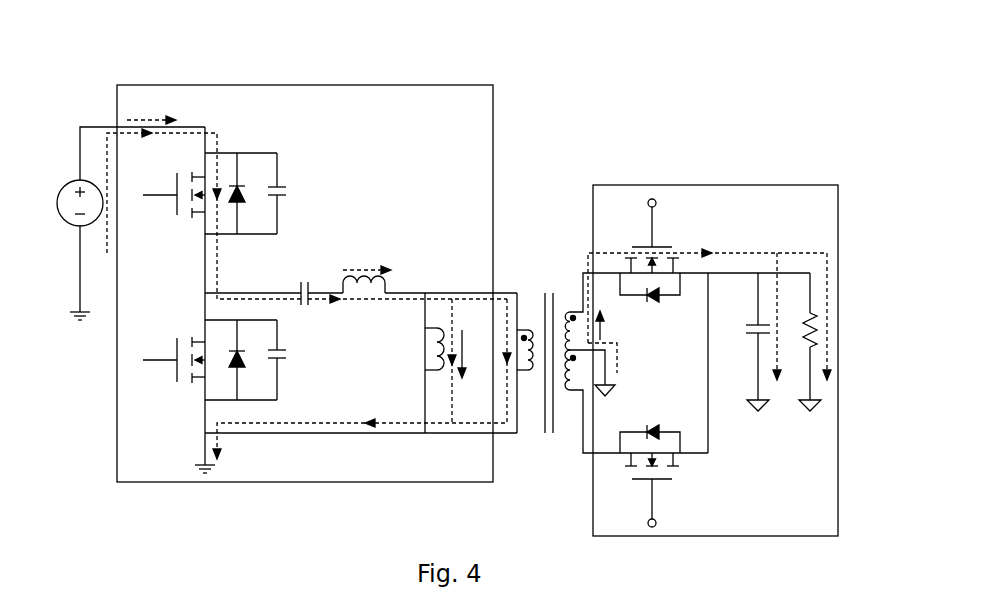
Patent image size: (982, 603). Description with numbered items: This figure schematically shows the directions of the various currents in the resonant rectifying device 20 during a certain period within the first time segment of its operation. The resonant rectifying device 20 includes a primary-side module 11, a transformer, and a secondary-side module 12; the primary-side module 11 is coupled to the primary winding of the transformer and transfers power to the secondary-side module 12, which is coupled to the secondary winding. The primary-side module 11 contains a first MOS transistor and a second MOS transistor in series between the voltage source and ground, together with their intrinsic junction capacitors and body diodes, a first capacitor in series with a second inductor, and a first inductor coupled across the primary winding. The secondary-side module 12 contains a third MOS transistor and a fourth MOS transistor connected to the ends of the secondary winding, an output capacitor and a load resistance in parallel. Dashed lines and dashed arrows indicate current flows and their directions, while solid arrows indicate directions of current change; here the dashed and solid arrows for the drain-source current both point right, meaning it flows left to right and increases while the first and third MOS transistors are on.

The primary-side module 11 is at (297, 283).
The secondary-side module 12 is at (713, 337).
The resonant rectifying device 20 is at (444, 302).